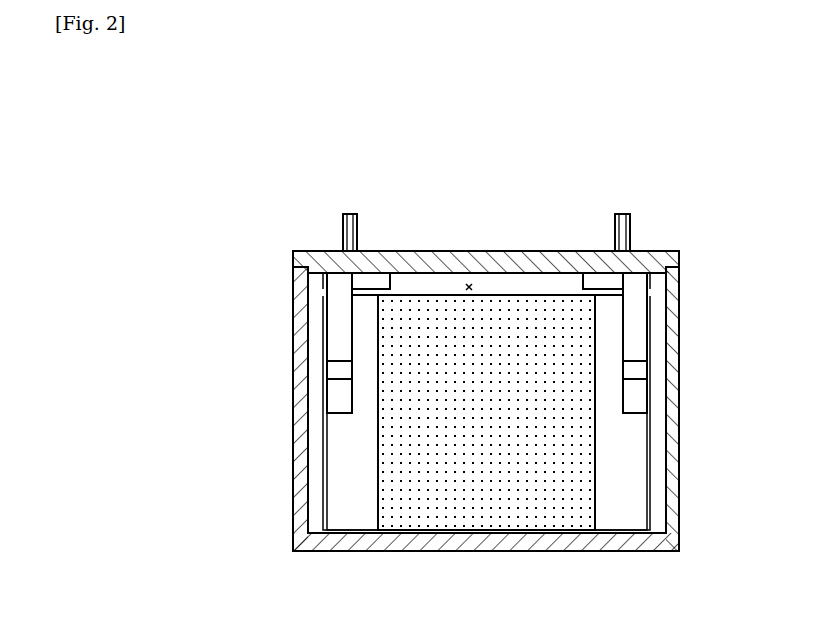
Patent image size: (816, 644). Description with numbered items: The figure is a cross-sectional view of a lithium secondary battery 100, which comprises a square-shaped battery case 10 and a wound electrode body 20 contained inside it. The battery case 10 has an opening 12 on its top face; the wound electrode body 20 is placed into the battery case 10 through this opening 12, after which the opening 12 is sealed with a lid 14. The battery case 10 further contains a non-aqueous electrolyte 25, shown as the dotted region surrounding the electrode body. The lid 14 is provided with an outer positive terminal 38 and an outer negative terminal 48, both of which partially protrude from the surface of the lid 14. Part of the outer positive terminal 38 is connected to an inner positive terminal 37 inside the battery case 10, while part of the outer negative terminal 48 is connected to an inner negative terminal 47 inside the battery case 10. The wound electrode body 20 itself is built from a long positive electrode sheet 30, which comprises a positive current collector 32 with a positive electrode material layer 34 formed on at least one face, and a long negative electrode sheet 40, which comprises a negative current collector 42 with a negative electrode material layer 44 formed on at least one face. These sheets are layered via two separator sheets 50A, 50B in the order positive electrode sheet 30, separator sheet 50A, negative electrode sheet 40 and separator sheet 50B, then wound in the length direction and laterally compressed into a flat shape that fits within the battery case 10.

The lithium secondary battery 100 is at (731, 137).
The battery case 10 is at (676, 294).
The lid 14 is at (677, 257).
The opening 12 is at (471, 281).
The wound electrode body 20 is at (509, 292).
The non-aqueous electrolyte 25 is at (550, 440).
The positive electrode sheet 30 is at (364, 448).
The positive current collector 32 is at (350, 520).
The positive electrode material layer 34 is at (435, 500).
The inner positive terminal 37 is at (338, 334).
The outer positive terminal 38 is at (350, 213).
The negative electrode sheet 40 is at (631, 448).
The negative current collector 42 is at (620, 522).
The negative electrode material layer 44 is at (567, 497).
The inner negative terminal 47 is at (636, 340).
The outer negative terminal 48 is at (624, 213).
The separator sheet 50A is at (497, 517).
The separator sheet 50B is at (497, 559).